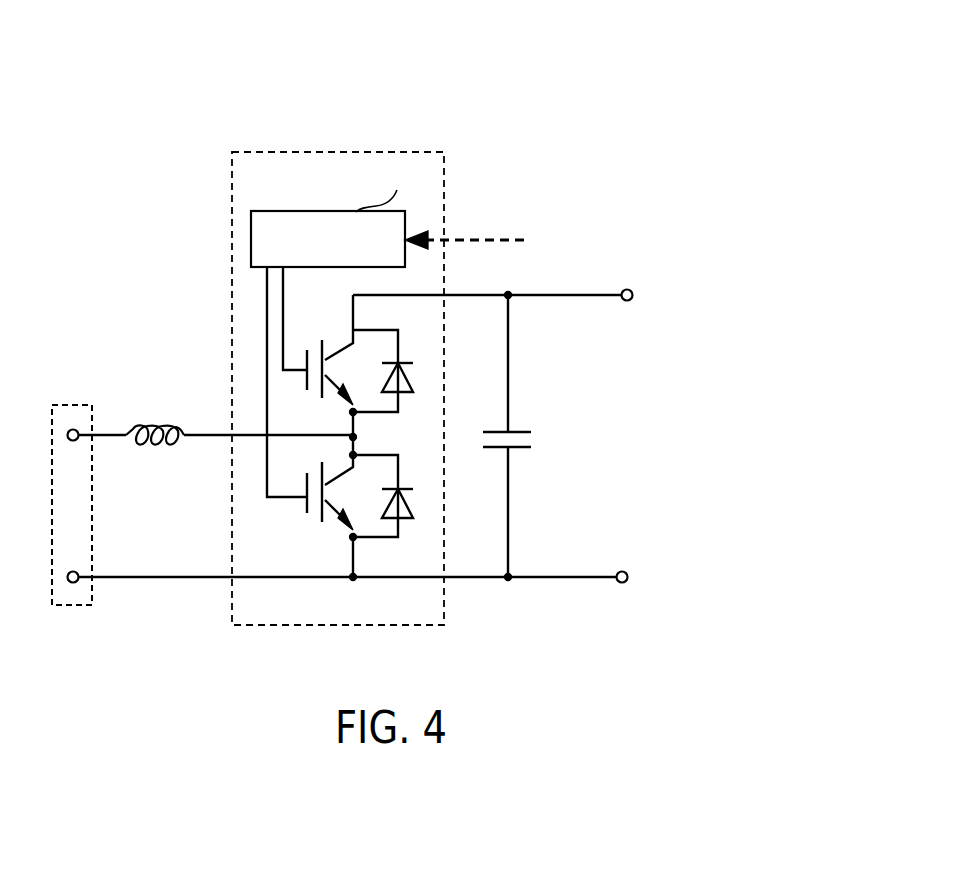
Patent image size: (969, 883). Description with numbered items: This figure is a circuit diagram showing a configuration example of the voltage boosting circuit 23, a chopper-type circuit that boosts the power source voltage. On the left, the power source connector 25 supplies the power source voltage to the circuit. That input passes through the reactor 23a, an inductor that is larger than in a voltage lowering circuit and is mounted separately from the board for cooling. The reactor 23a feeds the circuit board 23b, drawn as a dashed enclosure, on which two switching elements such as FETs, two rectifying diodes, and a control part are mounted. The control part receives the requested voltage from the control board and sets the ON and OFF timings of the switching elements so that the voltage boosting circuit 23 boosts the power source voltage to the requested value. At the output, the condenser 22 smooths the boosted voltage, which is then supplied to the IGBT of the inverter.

The voltage boosting circuit 23 is at (229, 97).
The reactor 23a is at (147, 420).
The circuit board 23b is at (424, 152).
The power source connector 25 is at (63, 405).
The condenser 22 is at (518, 423).